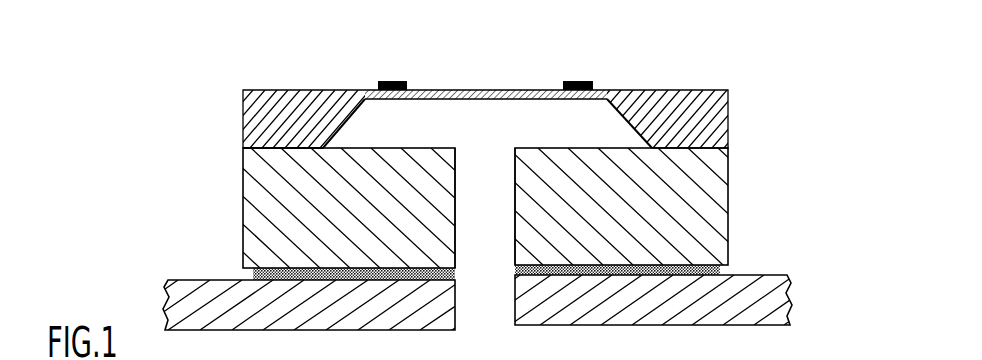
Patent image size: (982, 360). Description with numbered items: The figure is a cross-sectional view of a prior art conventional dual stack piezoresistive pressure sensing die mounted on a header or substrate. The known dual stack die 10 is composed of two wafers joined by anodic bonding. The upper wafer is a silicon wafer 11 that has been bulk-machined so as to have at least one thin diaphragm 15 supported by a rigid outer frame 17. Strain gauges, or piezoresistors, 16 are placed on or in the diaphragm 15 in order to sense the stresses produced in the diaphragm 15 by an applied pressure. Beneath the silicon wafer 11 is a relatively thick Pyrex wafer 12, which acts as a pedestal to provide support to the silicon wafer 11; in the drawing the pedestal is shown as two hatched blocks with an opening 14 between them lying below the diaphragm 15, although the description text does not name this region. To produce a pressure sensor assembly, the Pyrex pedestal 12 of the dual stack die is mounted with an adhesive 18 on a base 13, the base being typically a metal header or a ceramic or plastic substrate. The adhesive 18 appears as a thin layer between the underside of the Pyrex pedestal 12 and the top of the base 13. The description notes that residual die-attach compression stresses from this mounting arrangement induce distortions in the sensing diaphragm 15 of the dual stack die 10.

The dual stack die 10 is at (262, 87).
The silicon wafer 11 is at (712, 84).
The Pyrex wafer 12 is at (713, 192).
The base 13 is at (777, 292).
The cavity 14 is at (482, 172).
The diaphragm 15 is at (473, 100).
The strain gauges 16 is at (577, 81).
The rigid outer frame 17 is at (612, 105).
The adhesive 18 is at (720, 273).